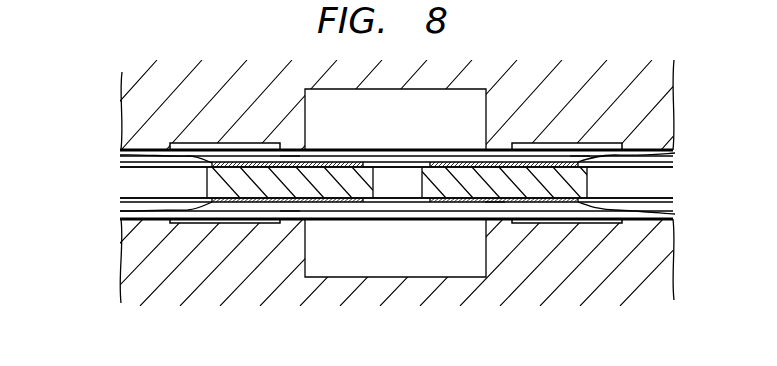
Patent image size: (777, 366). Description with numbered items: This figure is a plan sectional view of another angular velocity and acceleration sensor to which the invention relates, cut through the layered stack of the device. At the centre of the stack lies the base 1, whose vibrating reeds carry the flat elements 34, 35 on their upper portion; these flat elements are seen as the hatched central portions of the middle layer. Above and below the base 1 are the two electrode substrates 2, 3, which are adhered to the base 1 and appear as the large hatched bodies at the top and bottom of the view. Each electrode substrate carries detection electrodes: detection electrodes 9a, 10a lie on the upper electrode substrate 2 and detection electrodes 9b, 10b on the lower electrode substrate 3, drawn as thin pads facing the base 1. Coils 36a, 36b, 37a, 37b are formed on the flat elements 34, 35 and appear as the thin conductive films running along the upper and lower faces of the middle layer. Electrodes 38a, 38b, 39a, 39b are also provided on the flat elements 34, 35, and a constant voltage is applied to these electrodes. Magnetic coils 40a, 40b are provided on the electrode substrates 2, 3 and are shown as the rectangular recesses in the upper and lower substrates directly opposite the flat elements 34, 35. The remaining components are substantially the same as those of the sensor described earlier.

The base 1 is at (662, 184).
The electrode substrate 2 is at (665, 107).
The electrode substrate 3 is at (662, 248).
The detection electrode 9a is at (217, 143).
The detection electrode 9b is at (217, 223).
The detection electrode 10a is at (567, 168).
The detection electrode 10b is at (565, 212).
The flat element 34 is at (315, 170).
The flat element 35 is at (452, 173).
The coil 36a is at (120, 154).
The coil 36b is at (120, 210).
The coil 37a is at (675, 153).
The coil 37b is at (675, 214).
The electrode 38a is at (293, 160).
The electrode 38b is at (288, 213).
The electrode 39a is at (582, 143).
The electrode 39b is at (493, 202).
The magnetic coil 40a is at (462, 95).
The magnetic coil 40b is at (423, 268).